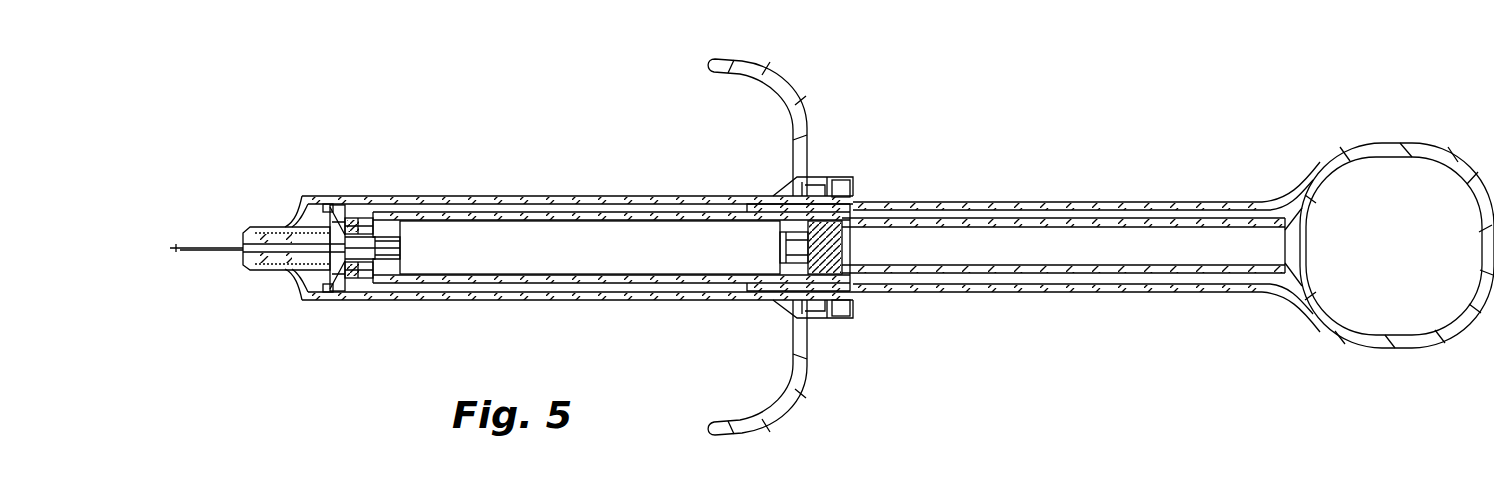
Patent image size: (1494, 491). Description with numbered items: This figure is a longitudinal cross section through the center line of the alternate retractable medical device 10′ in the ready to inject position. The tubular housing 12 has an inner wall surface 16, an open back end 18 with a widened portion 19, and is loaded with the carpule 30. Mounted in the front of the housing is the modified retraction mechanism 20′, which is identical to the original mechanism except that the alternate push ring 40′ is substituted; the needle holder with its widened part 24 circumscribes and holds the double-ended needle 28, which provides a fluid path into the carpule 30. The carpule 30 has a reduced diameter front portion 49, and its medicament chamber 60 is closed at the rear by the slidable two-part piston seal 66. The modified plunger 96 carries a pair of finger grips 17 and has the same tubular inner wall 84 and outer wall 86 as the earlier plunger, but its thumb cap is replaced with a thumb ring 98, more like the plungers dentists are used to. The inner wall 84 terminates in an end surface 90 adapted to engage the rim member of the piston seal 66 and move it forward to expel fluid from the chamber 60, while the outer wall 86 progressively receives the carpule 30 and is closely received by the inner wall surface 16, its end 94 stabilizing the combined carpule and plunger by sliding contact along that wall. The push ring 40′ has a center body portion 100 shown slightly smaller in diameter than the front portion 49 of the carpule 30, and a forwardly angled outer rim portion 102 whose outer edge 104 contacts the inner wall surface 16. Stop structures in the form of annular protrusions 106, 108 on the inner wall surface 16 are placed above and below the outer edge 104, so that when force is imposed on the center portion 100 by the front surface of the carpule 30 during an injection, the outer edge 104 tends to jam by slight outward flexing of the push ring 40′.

The retractable medical device 10′ is at (378, 73).
The tubular housing 12 is at (713, 194).
The inner wall surface 16 is at (572, 196).
The finger grips 17 is at (787, 80).
The open back end 18 is at (847, 194).
The widened portion 19 is at (831, 171).
The retraction mechanism 20′ is at (306, 224).
The widened part 24 is at (327, 268).
The double-ended needle 28 is at (200, 246).
The carpule 30 is at (650, 210).
The push ring 40′ is at (327, 207).
The front portion 49 is at (384, 212).
The medicament chamber 60 is at (612, 244).
The piston seal 66 is at (860, 250).
The inner wall 84 is at (1122, 220).
The outer wall 86 is at (1052, 202).
The end surface 90 is at (810, 290).
The end 94 is at (738, 208).
The plunger 96 is at (1230, 198).
The thumb ring 98 is at (1397, 143).
The center body portion 100 is at (372, 238).
The outer rim portion 102 is at (352, 222).
The outer edge 104 is at (333, 204).
The annular protrusion 106 is at (350, 214).
The annular protrusion 108 is at (323, 203).